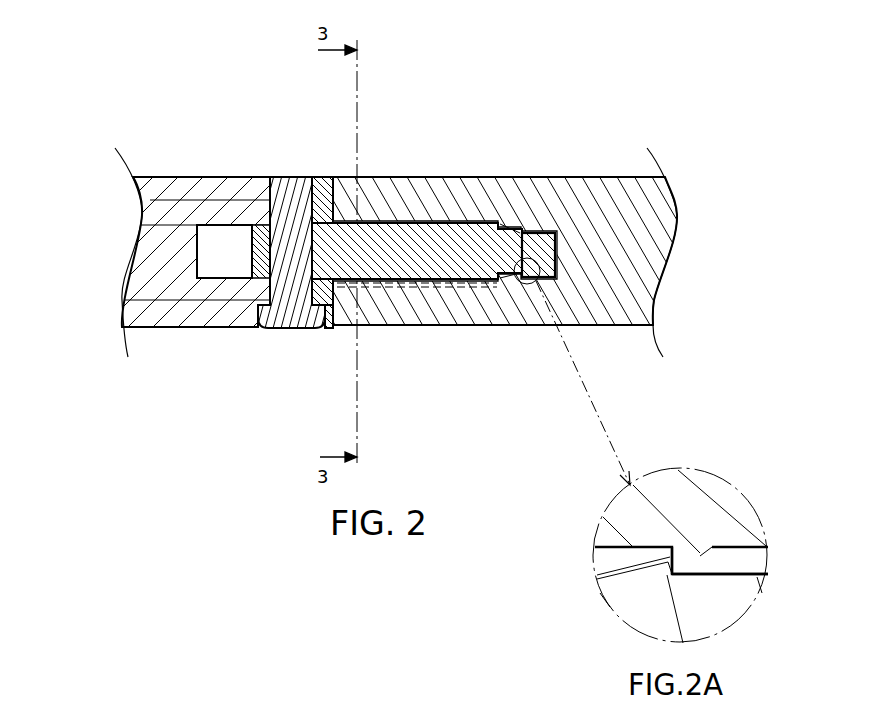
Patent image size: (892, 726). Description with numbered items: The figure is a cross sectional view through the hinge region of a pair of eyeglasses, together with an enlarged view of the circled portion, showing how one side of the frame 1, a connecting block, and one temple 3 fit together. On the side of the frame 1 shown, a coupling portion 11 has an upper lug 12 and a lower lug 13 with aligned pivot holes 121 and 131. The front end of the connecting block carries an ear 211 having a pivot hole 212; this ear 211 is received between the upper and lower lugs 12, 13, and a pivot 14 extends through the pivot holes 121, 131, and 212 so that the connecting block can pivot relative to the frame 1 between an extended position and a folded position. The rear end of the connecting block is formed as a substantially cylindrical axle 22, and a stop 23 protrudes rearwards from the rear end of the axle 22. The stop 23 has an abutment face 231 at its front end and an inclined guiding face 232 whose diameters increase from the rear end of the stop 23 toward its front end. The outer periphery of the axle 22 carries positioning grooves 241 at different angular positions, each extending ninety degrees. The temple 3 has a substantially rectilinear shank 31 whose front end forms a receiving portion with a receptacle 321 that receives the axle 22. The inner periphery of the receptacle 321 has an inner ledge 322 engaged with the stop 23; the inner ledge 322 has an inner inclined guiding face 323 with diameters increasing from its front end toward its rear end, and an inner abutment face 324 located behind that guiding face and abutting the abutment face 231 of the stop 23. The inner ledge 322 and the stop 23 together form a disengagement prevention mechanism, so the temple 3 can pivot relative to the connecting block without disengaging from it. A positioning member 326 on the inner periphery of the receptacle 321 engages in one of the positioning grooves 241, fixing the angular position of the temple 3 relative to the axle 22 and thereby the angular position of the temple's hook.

In FIG. 2, the frame 1 is at (240, 245).
In FIG. 2, the coupling portion 11 is at (153, 170).
In FIG. 2, the upper lug 12 is at (213, 180).
In FIG. 2, the pivot hole 121 is at (267, 185).
In FIG. 2, the lower lug 13 is at (213, 310).
In FIG. 2, the pivot hole 131 is at (263, 327).
In FIG. 2, the pivot 14 is at (290, 313).
In FIG. 2, the ear 211 is at (325, 245).
In FIG. 2, the pivot hole 212 is at (252, 252).
In FIG. 2, the axle 22 is at (443, 243).
In FIG. 2A, the stop 23 is at (682, 557).
In FIG. 2A, the abutment face 231 is at (675, 556).
In FIG. 2A, the inclined guiding face 232 is at (674, 572).
In FIG. 2, the positioning grooves 241 is at (417, 342).
In FIG. 2, the positioning member 326 is at (402, 285).
In FIG. 2, the temple 3 is at (494, 245).
In FIG. 2, the shank 31 is at (577, 195).
In FIG. 2A, the shank 31 is at (712, 610).
In FIG. 2, the receptacle 321 is at (402, 223).
In FIG. 2A, the inner ledge 322 is at (664, 562).
In FIG. 2A, the inner inclined guiding face 323 is at (663, 558).
In FIG. 2A, the inner abutment face 324 is at (665, 563).